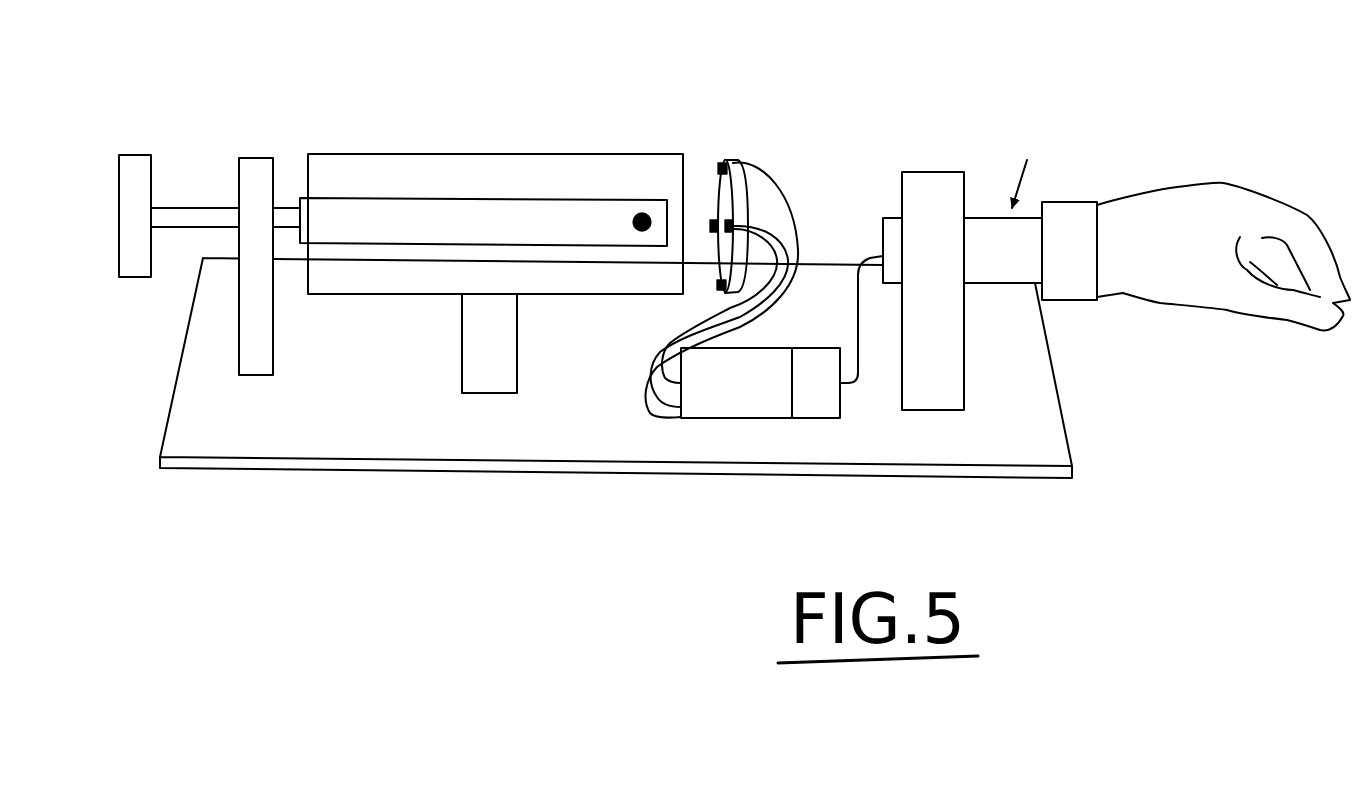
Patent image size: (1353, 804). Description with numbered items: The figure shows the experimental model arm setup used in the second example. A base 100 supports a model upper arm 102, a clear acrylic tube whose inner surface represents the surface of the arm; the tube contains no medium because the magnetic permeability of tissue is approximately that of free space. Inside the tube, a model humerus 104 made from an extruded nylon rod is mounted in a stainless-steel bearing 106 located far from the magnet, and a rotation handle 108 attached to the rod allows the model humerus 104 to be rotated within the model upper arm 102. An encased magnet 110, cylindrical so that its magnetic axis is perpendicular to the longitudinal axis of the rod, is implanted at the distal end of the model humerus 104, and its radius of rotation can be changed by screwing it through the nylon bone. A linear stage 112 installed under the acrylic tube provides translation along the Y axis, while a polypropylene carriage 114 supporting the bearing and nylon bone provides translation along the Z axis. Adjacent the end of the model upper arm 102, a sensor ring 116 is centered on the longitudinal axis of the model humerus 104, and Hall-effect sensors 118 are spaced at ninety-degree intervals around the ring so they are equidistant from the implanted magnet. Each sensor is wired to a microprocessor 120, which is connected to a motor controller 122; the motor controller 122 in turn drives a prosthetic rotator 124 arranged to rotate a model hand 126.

The base 100 is at (398, 442).
The model upper arm 102 is at (512, 150).
The model humerus 104 is at (370, 195).
The stainless-steel bearing 106 is at (228, 200).
The rotation handle 108 is at (146, 135).
The encased magnet 110 is at (647, 208).
The linear stage 112 is at (500, 353).
The polypropylene carriage 114 is at (255, 353).
The sensor ring 116 is at (740, 193).
The Hall-effect sensors 118 is at (724, 163).
The microprocessor 120 is at (712, 407).
The motor controller 122 is at (813, 408).
The prosthetic rotator 124 is at (897, 222).
The model hand 126 is at (1183, 213).